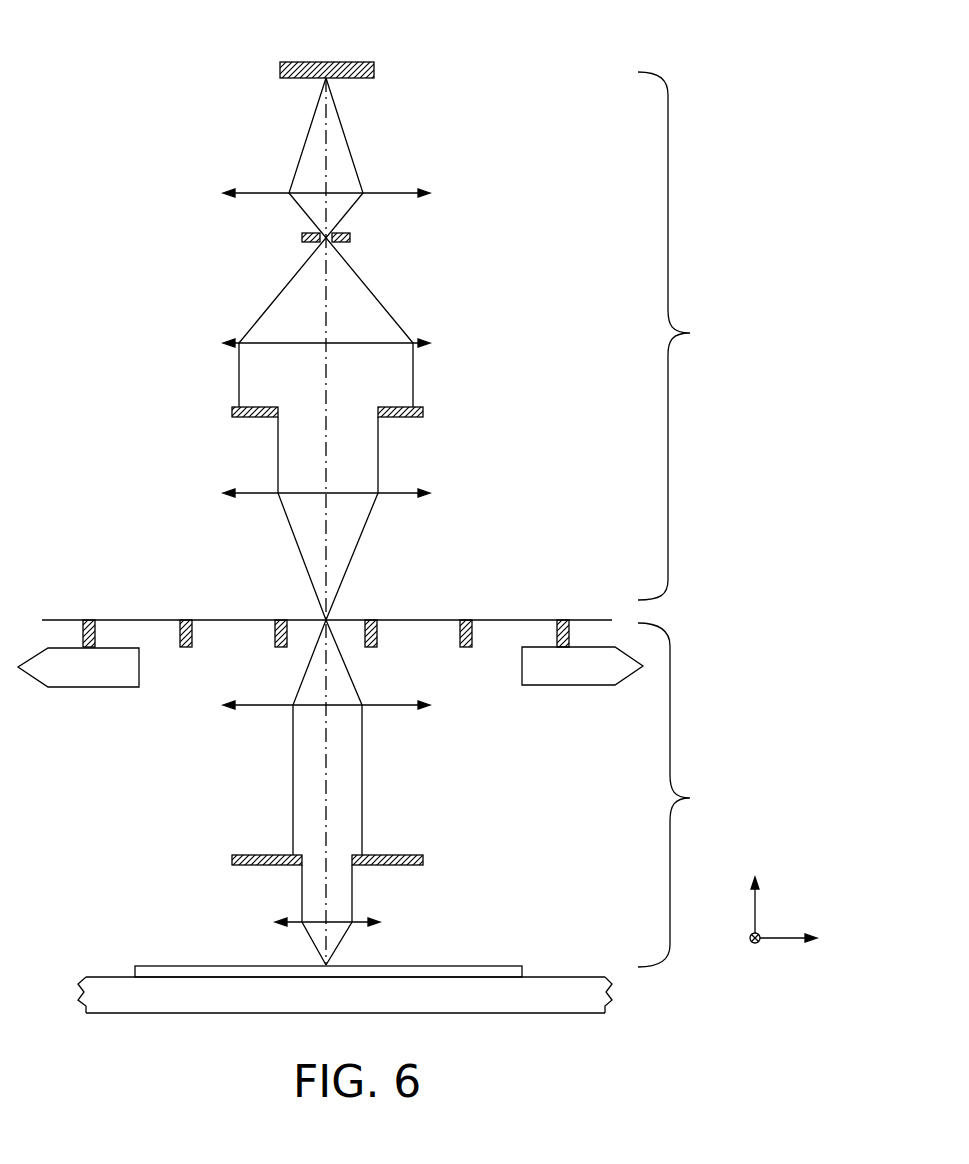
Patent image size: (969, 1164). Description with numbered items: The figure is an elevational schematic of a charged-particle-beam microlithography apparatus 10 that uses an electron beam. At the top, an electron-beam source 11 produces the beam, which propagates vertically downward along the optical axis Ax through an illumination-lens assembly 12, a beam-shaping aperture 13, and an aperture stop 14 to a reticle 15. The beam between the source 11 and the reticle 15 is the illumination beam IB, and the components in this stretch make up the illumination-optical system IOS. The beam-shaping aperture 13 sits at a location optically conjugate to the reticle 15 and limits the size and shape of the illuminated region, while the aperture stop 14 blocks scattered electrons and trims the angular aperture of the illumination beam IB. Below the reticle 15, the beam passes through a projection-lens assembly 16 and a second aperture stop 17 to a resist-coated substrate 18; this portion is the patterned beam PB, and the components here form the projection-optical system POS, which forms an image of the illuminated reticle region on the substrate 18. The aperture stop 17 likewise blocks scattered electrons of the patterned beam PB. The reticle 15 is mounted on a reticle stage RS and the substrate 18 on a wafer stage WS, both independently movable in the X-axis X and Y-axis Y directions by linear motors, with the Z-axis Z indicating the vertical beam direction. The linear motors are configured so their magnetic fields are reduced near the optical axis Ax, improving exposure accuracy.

The charged-particle-beam microlithography apparatus 10 is at (566, 82).
The electron-beam source 11 is at (365, 62).
The illumination-lens assembly 12 is at (392, 193).
The beam-shaping aperture 13 is at (350, 237).
The aperture stop 14 is at (418, 407).
The reticle 15 is at (512, 618).
The projection-lens assembly 16 is at (390, 705).
The aperture stop 17 is at (395, 855).
The substrate 18 is at (445, 966).
The optical axis Ax is at (326, 127).
The illumination beam IB is at (347, 137).
The patterned beam PB is at (303, 690).
The reticle stage RS is at (80, 683).
The wafer stage WS is at (98, 998).
The illumination-optical system IOS is at (696, 336).
The projection-optical system POS is at (699, 795).
The X-axis X is at (799, 939).
The Y-axis Y is at (743, 948).
The Z-axis Z is at (755, 888).